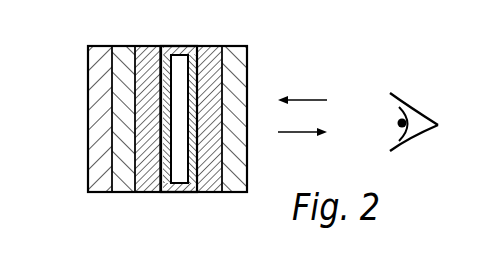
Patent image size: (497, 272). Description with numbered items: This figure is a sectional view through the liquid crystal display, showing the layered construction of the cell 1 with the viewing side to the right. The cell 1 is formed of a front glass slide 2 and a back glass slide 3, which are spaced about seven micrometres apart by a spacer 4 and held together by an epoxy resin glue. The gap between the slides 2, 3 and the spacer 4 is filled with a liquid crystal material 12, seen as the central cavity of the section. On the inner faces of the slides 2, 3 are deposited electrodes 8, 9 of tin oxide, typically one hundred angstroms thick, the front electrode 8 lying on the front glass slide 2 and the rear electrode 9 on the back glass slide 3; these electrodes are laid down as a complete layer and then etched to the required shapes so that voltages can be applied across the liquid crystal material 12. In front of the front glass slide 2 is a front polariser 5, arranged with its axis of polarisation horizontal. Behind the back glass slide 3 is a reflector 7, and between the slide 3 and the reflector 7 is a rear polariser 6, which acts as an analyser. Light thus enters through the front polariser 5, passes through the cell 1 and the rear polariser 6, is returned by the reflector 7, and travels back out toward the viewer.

The cell 1 is at (81, 176).
The front glass slide 2 is at (214, 47).
The back glass slide 3 is at (142, 47).
The spacer 4 is at (192, 190).
The front polariser 5 is at (234, 76).
The rear polariser 6 is at (122, 90).
The reflector 7 is at (98, 115).
The front electrode 8 is at (193, 47).
The rear electrode 9 is at (163, 47).
The liquid crystal material 12 is at (181, 175).